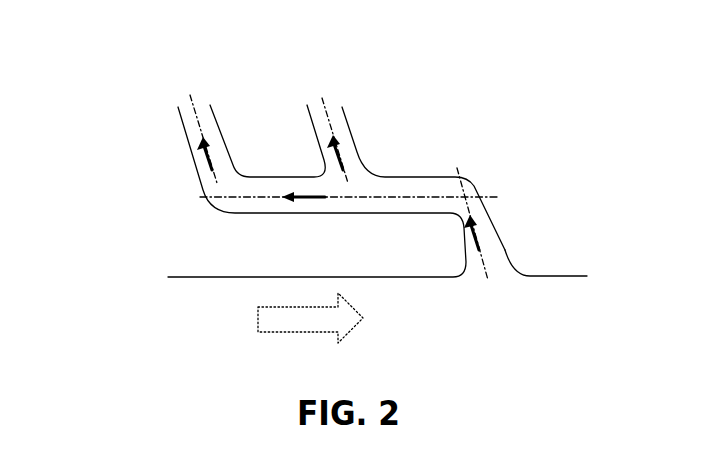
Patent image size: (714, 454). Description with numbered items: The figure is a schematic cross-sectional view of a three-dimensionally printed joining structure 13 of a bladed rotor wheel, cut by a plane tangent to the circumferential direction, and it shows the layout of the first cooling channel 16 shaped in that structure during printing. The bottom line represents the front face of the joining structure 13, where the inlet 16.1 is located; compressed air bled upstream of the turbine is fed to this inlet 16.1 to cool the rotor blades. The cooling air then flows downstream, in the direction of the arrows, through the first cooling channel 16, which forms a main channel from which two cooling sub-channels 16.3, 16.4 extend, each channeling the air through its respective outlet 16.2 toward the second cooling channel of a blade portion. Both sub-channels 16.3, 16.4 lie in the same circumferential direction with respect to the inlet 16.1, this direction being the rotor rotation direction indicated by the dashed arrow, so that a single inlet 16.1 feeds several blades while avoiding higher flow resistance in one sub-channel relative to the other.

The joining structure 13 is at (212, 287).
The first cooling channel 16 is at (473, 180).
The inlet 16.1 is at (480, 290).
The outlet 16.2 is at (348, 105).
The cooling sub-channel 16.3 is at (355, 130).
The cooling sub-channel 16.4 is at (185, 135).